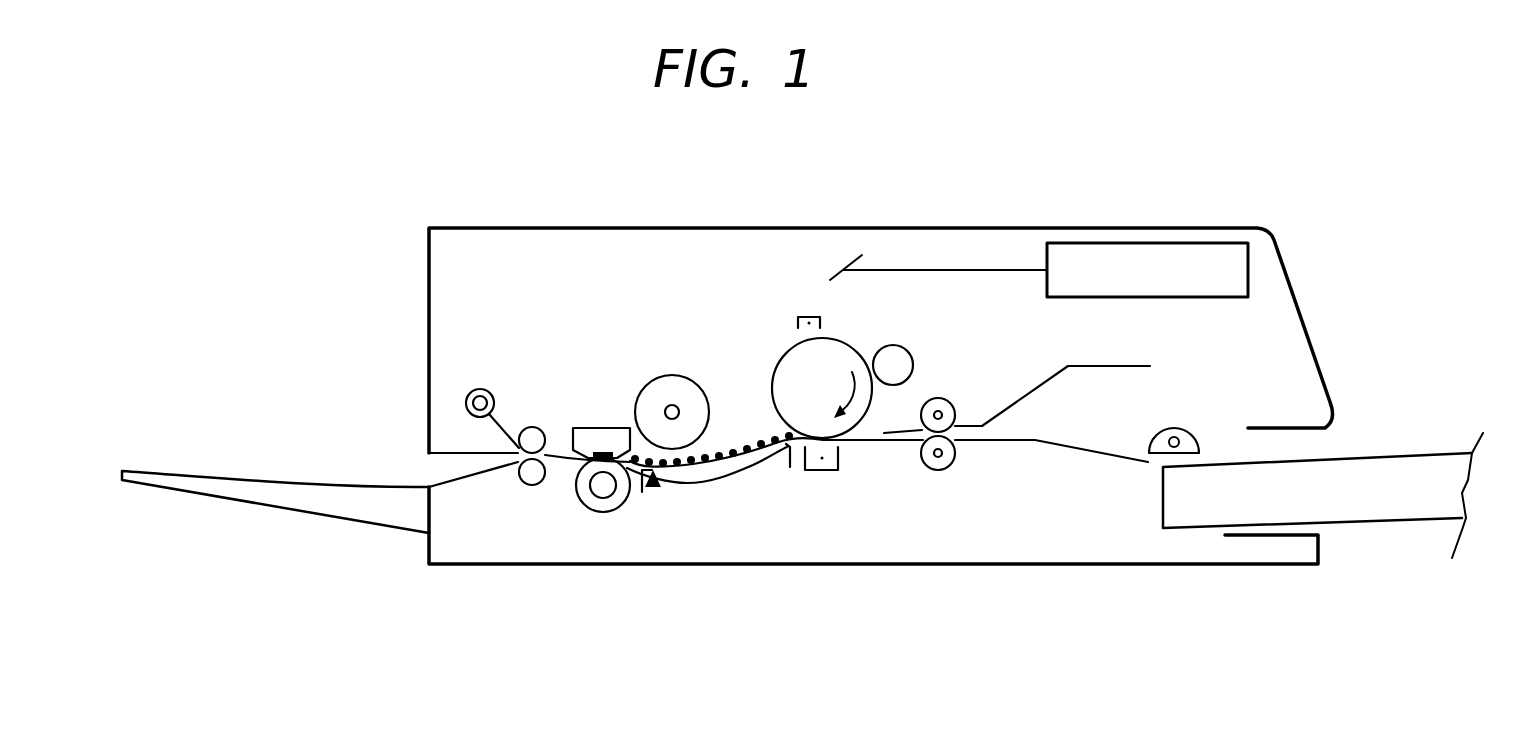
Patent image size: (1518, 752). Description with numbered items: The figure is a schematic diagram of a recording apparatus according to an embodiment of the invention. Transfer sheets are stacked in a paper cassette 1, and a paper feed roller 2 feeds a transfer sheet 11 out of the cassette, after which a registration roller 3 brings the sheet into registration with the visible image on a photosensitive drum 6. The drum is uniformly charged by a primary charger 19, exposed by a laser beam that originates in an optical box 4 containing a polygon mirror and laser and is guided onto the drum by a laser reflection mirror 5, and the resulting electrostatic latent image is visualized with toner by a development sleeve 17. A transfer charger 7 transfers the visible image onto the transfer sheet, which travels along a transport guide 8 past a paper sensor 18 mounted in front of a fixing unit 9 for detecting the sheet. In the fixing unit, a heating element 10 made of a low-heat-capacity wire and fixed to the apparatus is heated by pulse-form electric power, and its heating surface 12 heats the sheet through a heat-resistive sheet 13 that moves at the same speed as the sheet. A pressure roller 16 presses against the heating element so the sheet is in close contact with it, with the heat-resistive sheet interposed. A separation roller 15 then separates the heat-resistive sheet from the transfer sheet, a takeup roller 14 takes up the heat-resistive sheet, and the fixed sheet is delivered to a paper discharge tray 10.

The paper cassette 1 is at (1380, 507).
The paper feed roller 2 is at (1190, 427).
The registration roller 3 is at (948, 470).
The optical box 4 is at (1185, 235).
The laser reflection mirror 5 is at (836, 326).
The photosensitive drum 6 is at (852, 417).
The transfer charger 7 is at (823, 470).
The transport guide 8 is at (718, 482).
The fixing unit 9 is at (557, 400).
The heating element 10 is at (353, 508).
The transfer sheet 11 is at (676, 481).
The heating surface 12 is at (601, 446).
The heat-resistive sheet 13 is at (676, 375).
The takeup roller 14 is at (467, 395).
The separation roller 15 is at (528, 427).
The pressure roller 16 is at (585, 503).
The development sleeve 17 is at (896, 345).
The paper sensor 18 is at (645, 492).
The primary charger 19 is at (802, 317).